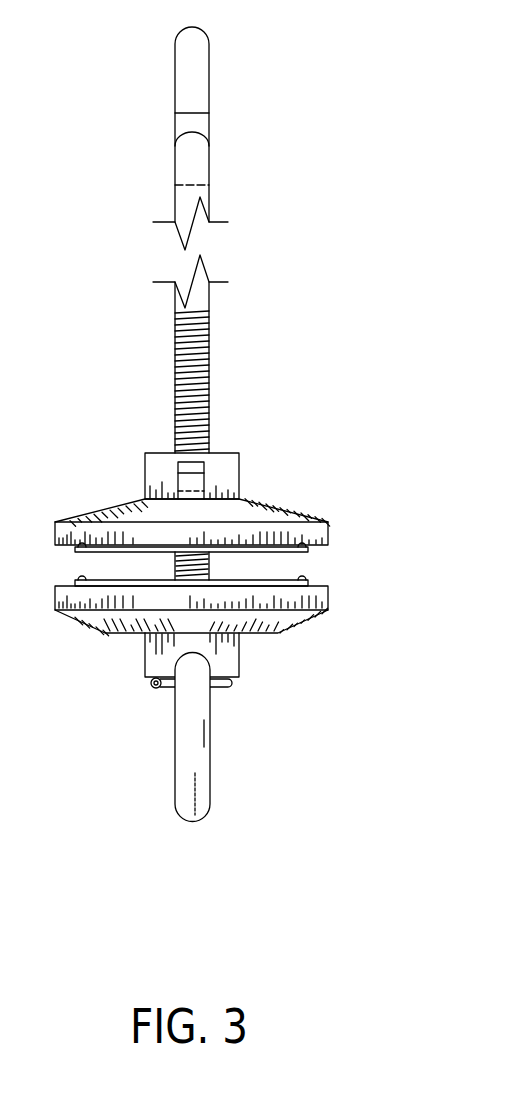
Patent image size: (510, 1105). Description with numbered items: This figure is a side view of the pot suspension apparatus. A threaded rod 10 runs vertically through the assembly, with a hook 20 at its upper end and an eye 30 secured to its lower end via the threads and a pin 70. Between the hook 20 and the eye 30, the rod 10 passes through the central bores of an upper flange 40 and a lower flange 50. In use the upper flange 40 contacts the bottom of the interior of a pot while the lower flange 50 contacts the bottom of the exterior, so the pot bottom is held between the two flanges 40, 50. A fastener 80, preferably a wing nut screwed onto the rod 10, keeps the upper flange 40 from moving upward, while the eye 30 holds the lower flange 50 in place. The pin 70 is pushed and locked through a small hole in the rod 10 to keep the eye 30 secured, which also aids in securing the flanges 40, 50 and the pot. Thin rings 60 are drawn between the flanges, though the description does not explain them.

The rod 10 is at (208, 344).
The hook 20 is at (186, 71).
The eye 30 is at (207, 748).
The upper flange 40 is at (133, 511).
The lower flange 50 is at (300, 617).
The flange rings 60 is at (305, 548).
The pin 70 is at (148, 687).
The upper flange fastener 80 is at (227, 460).